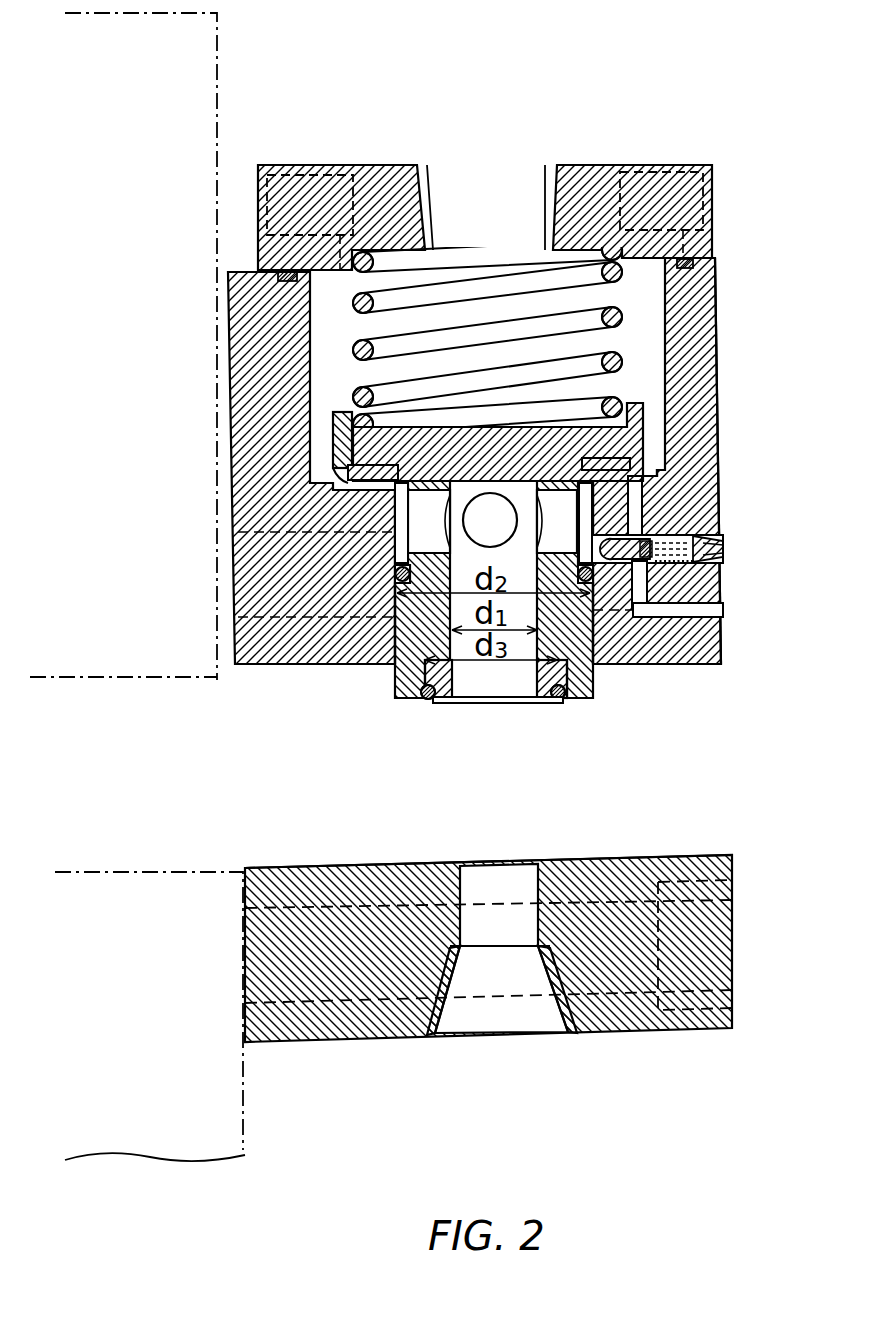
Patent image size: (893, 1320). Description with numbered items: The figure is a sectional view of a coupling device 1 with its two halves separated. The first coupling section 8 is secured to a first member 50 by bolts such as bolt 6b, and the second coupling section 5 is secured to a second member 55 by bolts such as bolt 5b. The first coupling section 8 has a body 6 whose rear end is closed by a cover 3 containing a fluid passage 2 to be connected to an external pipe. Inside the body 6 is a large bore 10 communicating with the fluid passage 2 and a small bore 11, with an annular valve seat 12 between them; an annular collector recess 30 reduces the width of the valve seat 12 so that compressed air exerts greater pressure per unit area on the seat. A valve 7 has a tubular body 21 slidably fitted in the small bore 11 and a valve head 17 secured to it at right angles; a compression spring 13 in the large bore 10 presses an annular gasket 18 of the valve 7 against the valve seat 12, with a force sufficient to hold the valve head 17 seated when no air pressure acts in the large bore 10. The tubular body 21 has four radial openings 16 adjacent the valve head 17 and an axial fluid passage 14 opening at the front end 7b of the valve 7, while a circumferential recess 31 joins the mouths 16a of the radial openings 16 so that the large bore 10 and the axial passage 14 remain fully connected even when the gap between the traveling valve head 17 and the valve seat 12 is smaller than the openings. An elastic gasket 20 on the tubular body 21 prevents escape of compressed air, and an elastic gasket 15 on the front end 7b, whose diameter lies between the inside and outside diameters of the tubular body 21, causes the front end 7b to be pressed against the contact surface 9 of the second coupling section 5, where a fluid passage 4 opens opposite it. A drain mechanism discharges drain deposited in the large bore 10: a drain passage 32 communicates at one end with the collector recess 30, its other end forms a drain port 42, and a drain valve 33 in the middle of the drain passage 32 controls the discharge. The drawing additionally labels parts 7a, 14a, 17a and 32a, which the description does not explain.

The coupling device 1 is at (781, 763).
The fluid passage 2 is at (430, 187).
The cover 3 is at (580, 180).
The fluid passage 4 is at (463, 1022).
The second coupling section 5 is at (735, 990).
The bolt 5b is at (700, 881).
The body 6 is at (690, 302).
The bolt 6b is at (690, 508).
The valve 7 is at (652, 407).
The piston stem portion 7a is at (393, 678).
The front end of the valve 7b is at (593, 677).
The first coupling section 8 is at (720, 337).
The contact surface 9 is at (635, 855).
The large bore 10 is at (692, 267).
The small bore 11 is at (597, 670).
The annular valve seat 12 is at (657, 473).
The compression spring 13 is at (352, 305).
The axial fluid passage 14 is at (538, 668).
The plate 14a is at (473, 697).
The elastic gasket 15 is at (427, 700).
The radial openings 16 is at (432, 518).
The mouths of the radial openings 16a is at (403, 520).
The valve head 17 is at (343, 408).
The retaining ring 17a is at (375, 470).
The annular gasket 18 is at (337, 482).
The elastic gasket 20 is at (398, 576).
The tubular body 21 is at (337, 667).
The annular collector recess 30 is at (688, 468).
The circumferential recess 31 is at (403, 546).
The drain passage 32 is at (645, 612).
The valve seat 32a is at (723, 576).
The drain valve 33 is at (663, 568).
The drain port 42 is at (713, 612).
The first member 50 is at (178, 58).
The second member 55 is at (200, 1137).